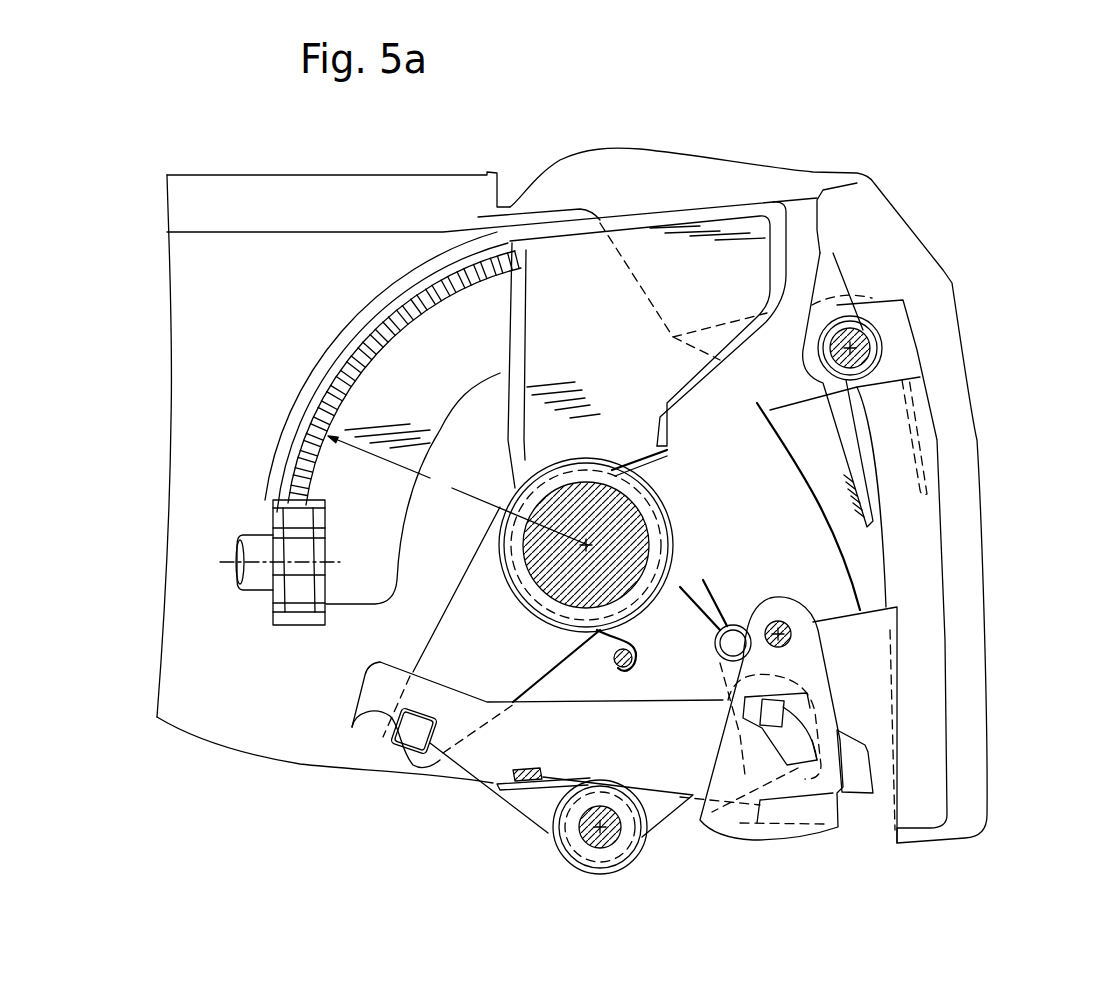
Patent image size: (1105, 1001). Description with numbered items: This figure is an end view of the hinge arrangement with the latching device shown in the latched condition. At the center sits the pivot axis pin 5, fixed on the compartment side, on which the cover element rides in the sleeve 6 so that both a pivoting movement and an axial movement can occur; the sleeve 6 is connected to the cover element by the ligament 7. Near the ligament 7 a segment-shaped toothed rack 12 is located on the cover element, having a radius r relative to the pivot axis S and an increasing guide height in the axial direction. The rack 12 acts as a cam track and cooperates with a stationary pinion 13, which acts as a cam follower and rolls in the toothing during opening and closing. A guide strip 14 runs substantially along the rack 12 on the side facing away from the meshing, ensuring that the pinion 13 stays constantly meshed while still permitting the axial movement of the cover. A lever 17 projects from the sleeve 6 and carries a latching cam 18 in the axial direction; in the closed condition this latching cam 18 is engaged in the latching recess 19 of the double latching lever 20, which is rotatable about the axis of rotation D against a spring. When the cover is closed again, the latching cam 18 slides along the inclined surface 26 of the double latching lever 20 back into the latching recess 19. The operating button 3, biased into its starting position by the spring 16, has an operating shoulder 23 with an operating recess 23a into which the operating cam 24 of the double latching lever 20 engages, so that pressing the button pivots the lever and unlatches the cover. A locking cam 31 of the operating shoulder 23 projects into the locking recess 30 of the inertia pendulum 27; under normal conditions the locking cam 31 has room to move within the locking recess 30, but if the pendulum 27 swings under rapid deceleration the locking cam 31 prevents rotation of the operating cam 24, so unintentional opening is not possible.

The operating button 3 is at (970, 473).
The pivot axis pin 5 is at (632, 553).
The sleeve 6 is at (650, 508).
The ligament 7 is at (597, 347).
The segment-shaped toothed rack 12 is at (363, 350).
The pinion 13 is at (297, 618).
The guide strip 14 is at (303, 400).
The spring 16 is at (890, 353).
The lever 17 is at (500, 659).
The latching cam 18 is at (410, 740).
The latching recess 19 is at (375, 712).
The double latching lever 20 is at (607, 753).
The operating shoulder 23 is at (853, 667).
The operating recess 23a is at (873, 780).
The operating cam 24 is at (810, 709).
The inclined surface 26 is at (483, 787).
The inertia pendulum 27 is at (723, 820).
The locking recess 30 is at (810, 780).
The locking cam 31 is at (790, 708).
The pivot axis S is at (588, 545).
The axis of rotation D is at (603, 833).
The radius r is at (458, 490).